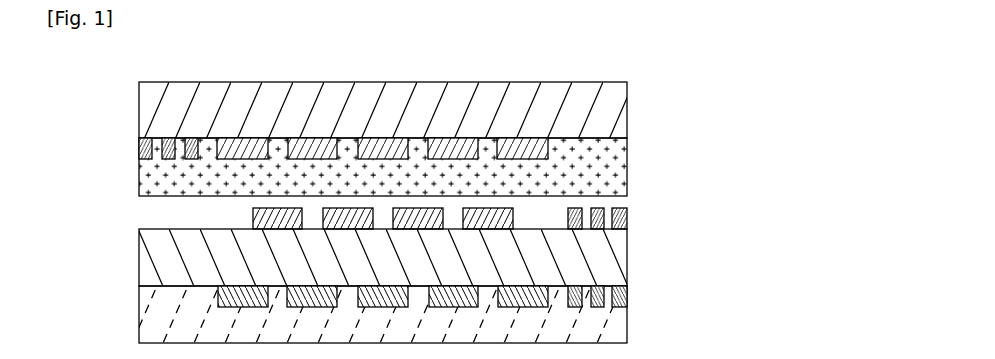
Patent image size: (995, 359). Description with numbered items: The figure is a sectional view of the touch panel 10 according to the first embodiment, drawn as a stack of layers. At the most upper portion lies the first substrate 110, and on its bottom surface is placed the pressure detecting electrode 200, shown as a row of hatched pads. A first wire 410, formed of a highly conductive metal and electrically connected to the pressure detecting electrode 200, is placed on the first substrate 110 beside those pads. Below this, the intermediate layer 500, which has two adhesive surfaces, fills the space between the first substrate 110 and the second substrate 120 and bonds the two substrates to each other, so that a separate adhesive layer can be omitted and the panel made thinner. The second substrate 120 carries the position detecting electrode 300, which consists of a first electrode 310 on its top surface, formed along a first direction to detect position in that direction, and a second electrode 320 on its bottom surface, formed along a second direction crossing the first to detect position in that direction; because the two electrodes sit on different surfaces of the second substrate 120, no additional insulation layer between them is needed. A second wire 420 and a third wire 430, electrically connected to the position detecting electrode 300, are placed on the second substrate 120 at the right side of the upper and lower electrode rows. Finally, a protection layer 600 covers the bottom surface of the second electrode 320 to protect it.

The touch panel 10 is at (158, 52).
The first substrate 110 is at (627, 103).
The second substrate 120 is at (622, 253).
The pressure detecting electrode 200 is at (548, 152).
The position detecting electrode 300 is at (300, 257).
The first electrode 310 is at (253, 219).
The second electrode 320 is at (218, 300).
The first wire 410 is at (139, 147).
The second wire 420 is at (627, 217).
The third wire 430 is at (627, 293).
The intermediate layer 500 is at (627, 173).
The protection layer 600 is at (611, 337).